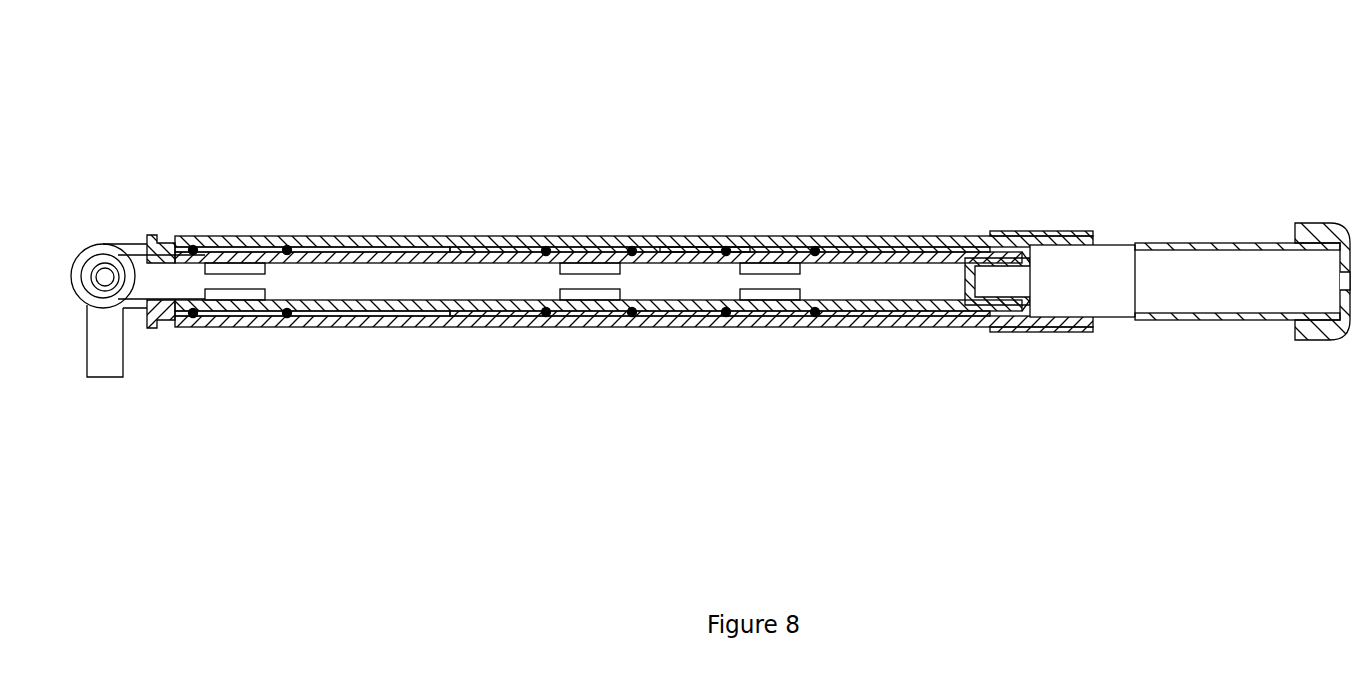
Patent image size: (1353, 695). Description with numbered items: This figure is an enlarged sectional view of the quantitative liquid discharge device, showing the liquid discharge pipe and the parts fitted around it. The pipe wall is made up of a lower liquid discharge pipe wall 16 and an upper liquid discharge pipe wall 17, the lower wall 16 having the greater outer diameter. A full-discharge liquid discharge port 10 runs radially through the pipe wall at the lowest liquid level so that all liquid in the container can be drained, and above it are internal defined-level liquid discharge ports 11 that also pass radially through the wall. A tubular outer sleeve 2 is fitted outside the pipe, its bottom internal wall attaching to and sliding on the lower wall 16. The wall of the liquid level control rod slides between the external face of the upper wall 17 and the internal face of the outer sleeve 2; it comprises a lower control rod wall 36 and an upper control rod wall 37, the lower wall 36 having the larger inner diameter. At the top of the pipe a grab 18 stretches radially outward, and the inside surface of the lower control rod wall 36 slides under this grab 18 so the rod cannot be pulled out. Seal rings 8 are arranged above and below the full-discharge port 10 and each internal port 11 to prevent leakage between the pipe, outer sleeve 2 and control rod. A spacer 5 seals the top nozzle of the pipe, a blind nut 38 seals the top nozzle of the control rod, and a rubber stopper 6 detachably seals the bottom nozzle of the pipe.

The outer sleeve 2 is at (708, 327).
The spacer 5 is at (965, 300).
The rubber stopper 6 is at (110, 355).
The seal rings 8 is at (288, 247).
The full-discharge liquid discharge port 10 is at (236, 249).
The internal defined-level liquid discharge port 11 is at (598, 263).
The lower liquid discharge pipe wall 16 is at (330, 327).
The upper liquid discharge pipe wall 17 is at (410, 327).
The grab 18 is at (1013, 332).
The lower control rod wall 36 is at (705, 247).
The upper control rod wall 37 is at (1113, 244).
The blind nut 38 is at (1317, 222).